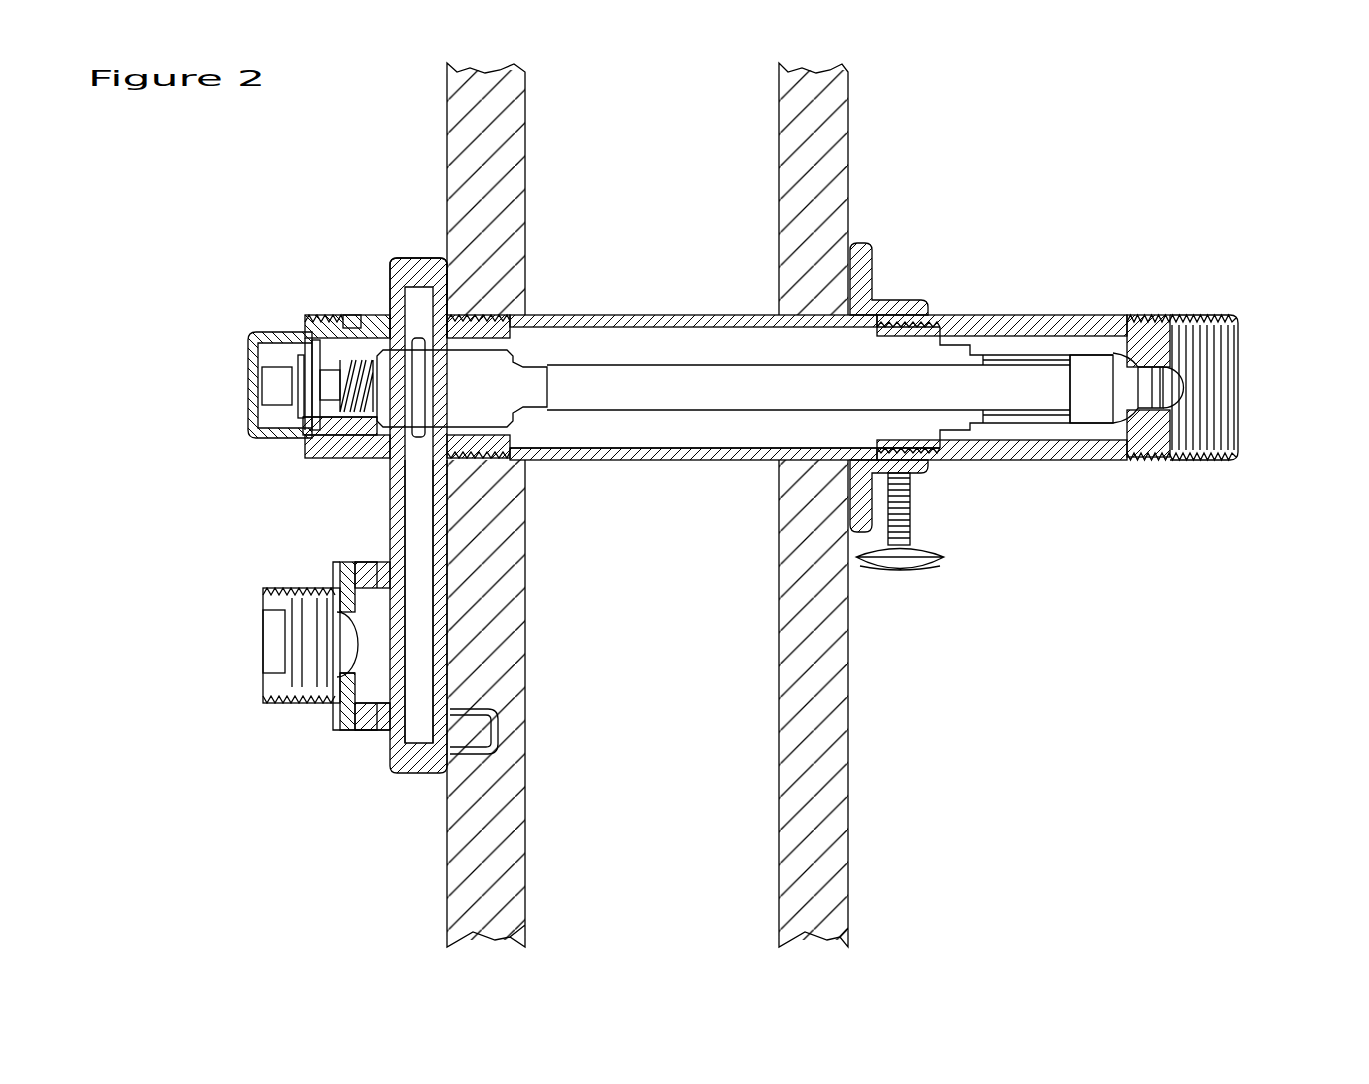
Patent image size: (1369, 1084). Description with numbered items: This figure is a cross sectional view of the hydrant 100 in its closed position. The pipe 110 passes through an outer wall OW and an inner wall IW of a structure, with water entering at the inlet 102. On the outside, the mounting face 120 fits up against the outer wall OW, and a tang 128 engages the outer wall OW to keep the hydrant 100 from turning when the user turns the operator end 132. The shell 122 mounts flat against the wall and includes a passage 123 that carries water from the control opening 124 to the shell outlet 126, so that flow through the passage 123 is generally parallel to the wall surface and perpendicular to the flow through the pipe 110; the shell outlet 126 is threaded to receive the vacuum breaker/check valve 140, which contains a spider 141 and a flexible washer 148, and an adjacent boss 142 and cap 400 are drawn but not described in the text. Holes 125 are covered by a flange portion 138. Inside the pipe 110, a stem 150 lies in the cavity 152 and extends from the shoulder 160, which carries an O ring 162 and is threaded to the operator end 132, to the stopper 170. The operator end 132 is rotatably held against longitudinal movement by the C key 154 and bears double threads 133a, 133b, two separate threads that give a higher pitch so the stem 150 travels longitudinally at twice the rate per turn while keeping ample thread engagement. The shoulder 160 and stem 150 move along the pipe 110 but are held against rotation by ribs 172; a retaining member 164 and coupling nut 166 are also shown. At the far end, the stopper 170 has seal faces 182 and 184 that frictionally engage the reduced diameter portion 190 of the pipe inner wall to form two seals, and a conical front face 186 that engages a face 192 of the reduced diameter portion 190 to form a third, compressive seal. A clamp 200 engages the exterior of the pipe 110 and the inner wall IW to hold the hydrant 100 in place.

The outer wall OW is at (510, 150).
The inner wall IW is at (836, 160).
The hydrant 100 is at (1095, 255).
The inlet 102 is at (1215, 390).
The pipe 110 is at (630, 320).
The mounting face 120 is at (401, 509).
The shell 122 is at (420, 283).
The passage 123 is at (420, 545).
The control opening 124 is at (362, 440).
The holes 125 is at (350, 440).
The shell outlet 126 is at (375, 740).
The tang 128 is at (475, 712).
The operator end 132 is at (266, 388).
The double thread 133a is at (300, 388).
The double thread 133b is at (318, 390).
The flange portion 138 is at (352, 312).
The vacuum breaker/check valve 140 is at (345, 722).
The spider 141 is at (345, 650).
The drain port 142 is at (335, 580).
The flexible washer 148 is at (355, 725).
The stem 150 is at (708, 385).
The cavity 152 is at (708, 432).
The C key 154 is at (303, 370).
The shoulder 160 is at (493, 385).
The O ring 162 is at (417, 368).
The end cap 164 is at (305, 340).
The coupling nut 166 is at (960, 330).
The stopper 170 is at (1100, 392).
The ribs 172 is at (1045, 345).
The seal face 182 is at (1135, 458).
The seal face 184 is at (1135, 432).
The conical front face 186 is at (1118, 413).
The reduced diameter portion 190 is at (1205, 322).
The face 192 is at (1150, 330).
The clamp 200 is at (872, 280).
The drain cap 400 is at (265, 630).